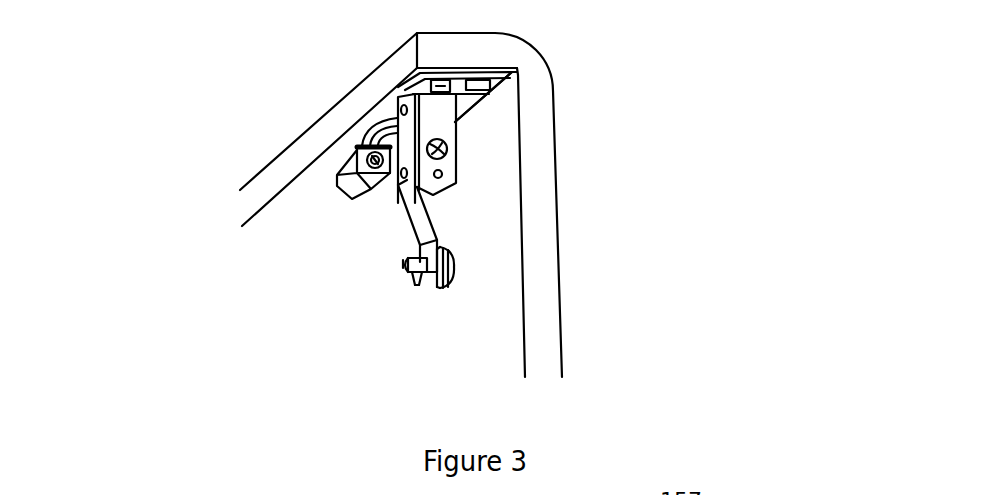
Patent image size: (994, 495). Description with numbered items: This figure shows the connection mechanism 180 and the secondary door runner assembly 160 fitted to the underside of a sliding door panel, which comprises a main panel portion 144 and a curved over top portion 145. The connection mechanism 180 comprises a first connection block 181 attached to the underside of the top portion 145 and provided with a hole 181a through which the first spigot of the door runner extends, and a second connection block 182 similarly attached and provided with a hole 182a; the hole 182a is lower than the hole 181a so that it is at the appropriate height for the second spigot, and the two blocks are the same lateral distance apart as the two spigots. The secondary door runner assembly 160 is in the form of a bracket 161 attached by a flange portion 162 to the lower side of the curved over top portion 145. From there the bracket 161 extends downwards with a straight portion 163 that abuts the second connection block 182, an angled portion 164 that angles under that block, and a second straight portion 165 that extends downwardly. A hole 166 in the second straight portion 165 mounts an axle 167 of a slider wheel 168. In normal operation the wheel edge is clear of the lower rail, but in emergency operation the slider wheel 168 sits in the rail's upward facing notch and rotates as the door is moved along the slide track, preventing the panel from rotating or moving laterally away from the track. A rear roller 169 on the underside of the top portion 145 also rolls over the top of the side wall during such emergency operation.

The main panel portion 144 is at (545, 212).
The curved over top portion 145 is at (477, 48).
The secondary door runner assembly 160 is at (359, 244).
The bracket 161 is at (452, 210).
The flange portion 162 is at (512, 73).
The straight portion 163 is at (398, 202).
The angled portion 164 is at (400, 176).
The second straight portion 165 is at (407, 258).
The hole 166 is at (417, 287).
The axle 167 is at (413, 275).
The slider wheel 168 is at (450, 289).
The roller 169 is at (519, 93).
The connection mechanism 180 is at (310, 190).
The first connection block 181 is at (343, 163).
The hole 181a is at (364, 143).
The second connection block 182 is at (442, 130).
The hole 182a is at (448, 153).